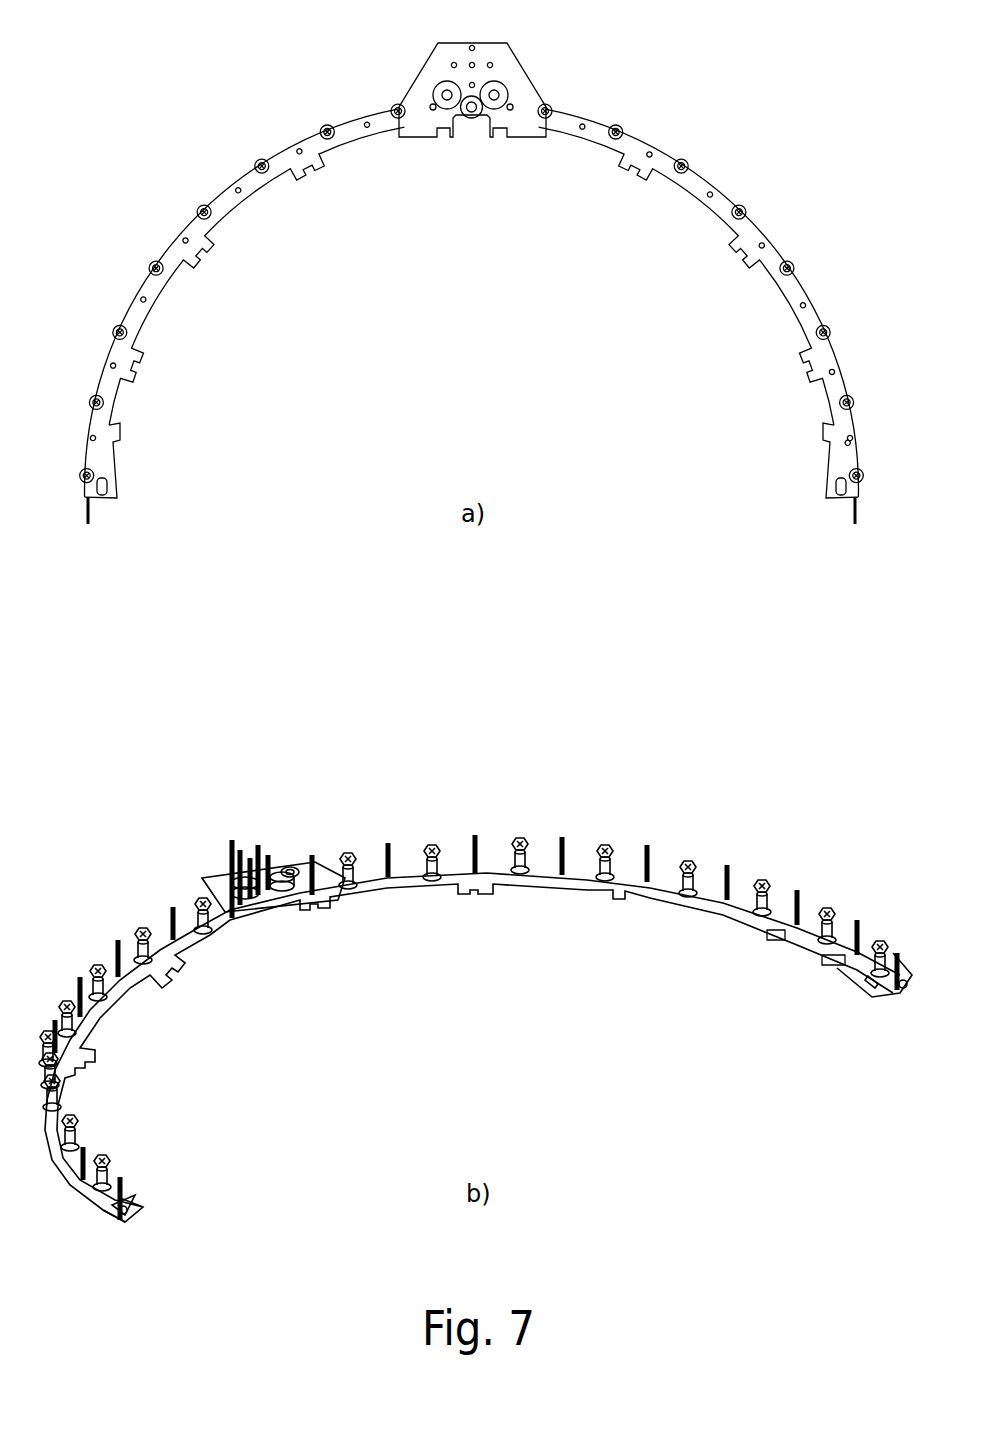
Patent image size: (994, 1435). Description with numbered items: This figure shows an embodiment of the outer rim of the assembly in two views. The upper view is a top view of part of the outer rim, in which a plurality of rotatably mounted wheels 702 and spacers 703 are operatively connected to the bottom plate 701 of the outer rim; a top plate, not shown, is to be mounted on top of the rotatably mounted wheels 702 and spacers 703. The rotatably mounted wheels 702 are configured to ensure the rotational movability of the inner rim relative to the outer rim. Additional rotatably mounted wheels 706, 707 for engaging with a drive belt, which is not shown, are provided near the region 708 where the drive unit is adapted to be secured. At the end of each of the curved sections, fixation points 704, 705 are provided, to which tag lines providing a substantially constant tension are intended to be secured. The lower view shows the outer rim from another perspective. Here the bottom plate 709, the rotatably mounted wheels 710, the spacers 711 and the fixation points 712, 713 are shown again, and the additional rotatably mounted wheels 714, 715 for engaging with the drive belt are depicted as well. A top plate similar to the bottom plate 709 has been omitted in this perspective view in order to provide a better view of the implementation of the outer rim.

The bottom plate 701 is at (698, 170).
The rotatably mounted wheels 702 is at (792, 262).
The spacers 703 is at (808, 302).
The fixation point 704 is at (850, 525).
The fixation point 705 is at (93, 525).
The additional rotatably mounted wheel 706 is at (440, 85).
The additional rotatably mounted wheel 707 is at (505, 85).
The region where the drive unit is adapted to be secured 708 is at (470, 35).
The bottom plate 709 is at (537, 885).
The rotatably mounted wheels 710 is at (612, 842).
The spacers 711 is at (655, 872).
The fixation point 712 is at (905, 995).
The fixation point 713 is at (125, 1225).
The additional rotatably mounted wheel 714 is at (215, 877).
The additional rotatably mounted wheel 715 is at (295, 867).